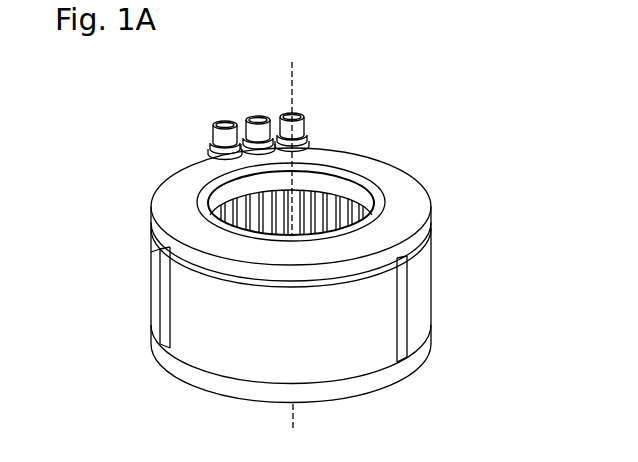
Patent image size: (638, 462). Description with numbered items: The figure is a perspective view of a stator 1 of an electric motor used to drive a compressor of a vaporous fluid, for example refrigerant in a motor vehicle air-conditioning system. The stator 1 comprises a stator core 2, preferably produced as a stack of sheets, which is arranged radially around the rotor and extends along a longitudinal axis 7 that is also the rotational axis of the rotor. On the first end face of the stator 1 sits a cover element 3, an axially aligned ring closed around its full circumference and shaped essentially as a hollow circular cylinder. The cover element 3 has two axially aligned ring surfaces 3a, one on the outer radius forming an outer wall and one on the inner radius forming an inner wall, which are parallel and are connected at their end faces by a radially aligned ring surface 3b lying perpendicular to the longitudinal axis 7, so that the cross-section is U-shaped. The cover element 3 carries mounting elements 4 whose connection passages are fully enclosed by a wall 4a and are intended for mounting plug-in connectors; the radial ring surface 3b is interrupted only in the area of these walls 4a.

The stator 1 is at (439, 128).
The stator core 2 is at (301, 189).
The cover element 3 is at (437, 178).
The axial ring surface 3a is at (230, 184).
The radial ring surface 3b is at (190, 202).
The mounting element 4 is at (288, 113).
The wall 4a is at (211, 141).
The longitudinal axis 7 is at (296, 408).